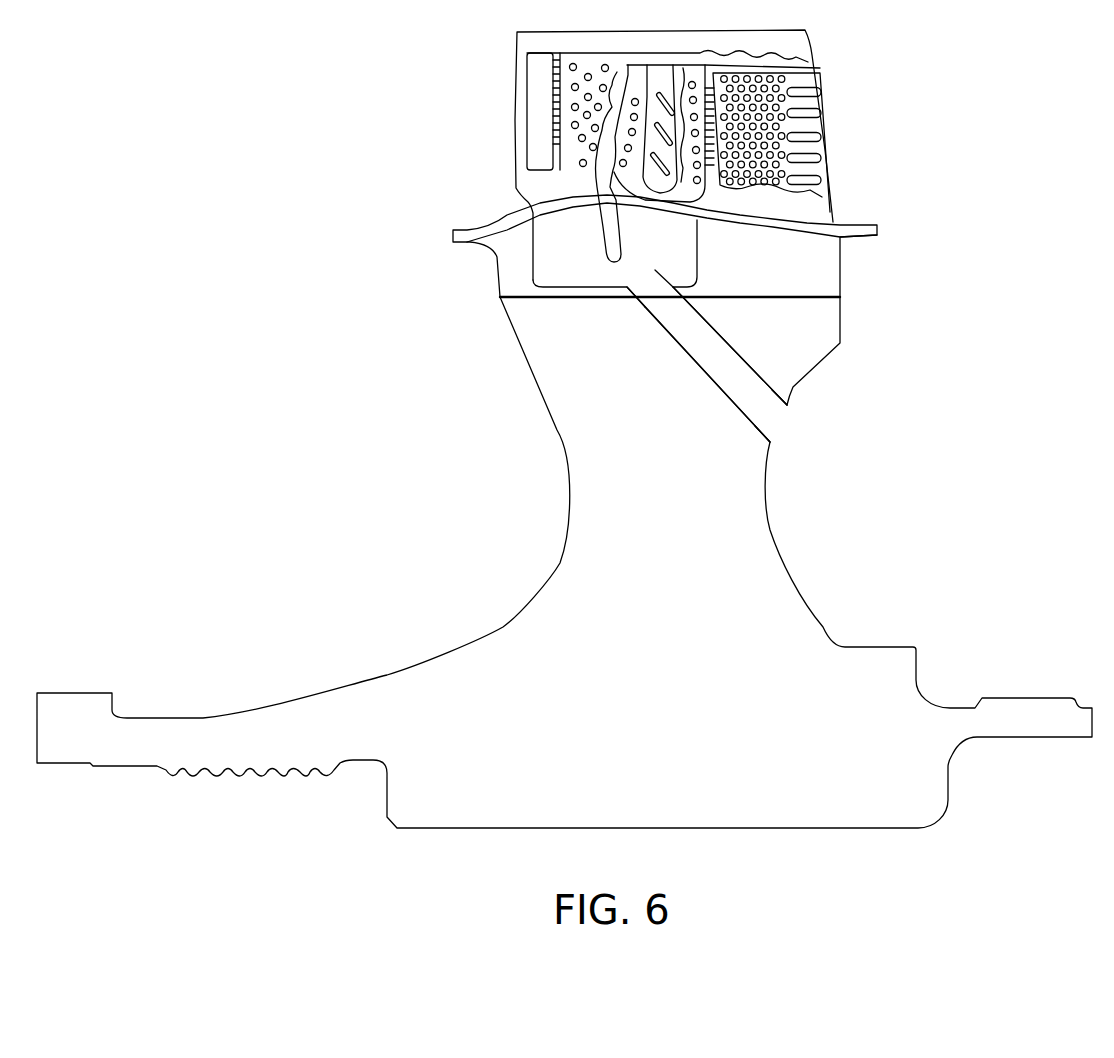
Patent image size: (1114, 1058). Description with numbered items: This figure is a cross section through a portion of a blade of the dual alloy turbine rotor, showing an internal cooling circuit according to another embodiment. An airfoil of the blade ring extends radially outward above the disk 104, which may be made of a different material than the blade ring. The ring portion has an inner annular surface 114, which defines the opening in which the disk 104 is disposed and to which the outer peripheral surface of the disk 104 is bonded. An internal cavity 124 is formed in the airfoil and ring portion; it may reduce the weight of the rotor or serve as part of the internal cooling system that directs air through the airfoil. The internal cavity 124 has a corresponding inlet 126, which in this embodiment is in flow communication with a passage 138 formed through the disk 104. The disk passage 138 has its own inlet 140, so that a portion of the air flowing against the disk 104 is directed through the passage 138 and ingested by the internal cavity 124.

The disk 104 is at (600, 491).
The inner annular surface 114 is at (597, 306).
The internal cavity 124 is at (577, 175).
The inlet 126 is at (658, 289).
The passage 138 is at (720, 360).
The inlet 140 is at (784, 431).